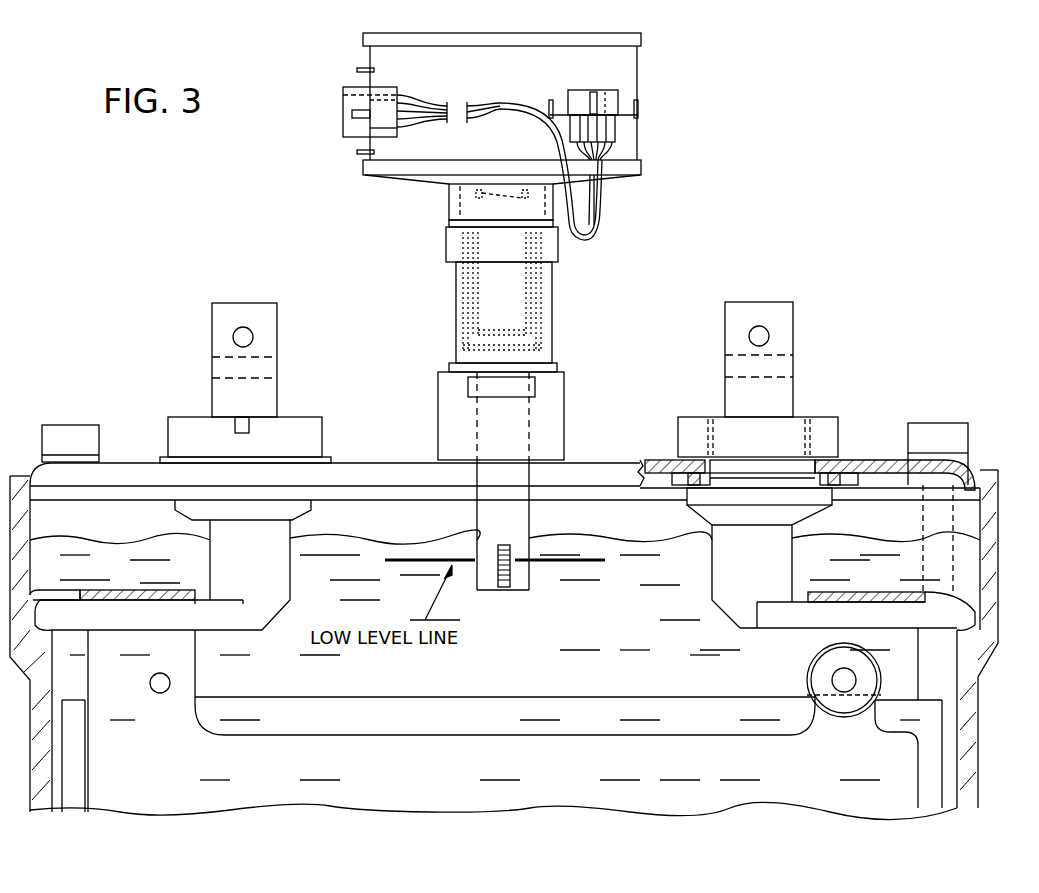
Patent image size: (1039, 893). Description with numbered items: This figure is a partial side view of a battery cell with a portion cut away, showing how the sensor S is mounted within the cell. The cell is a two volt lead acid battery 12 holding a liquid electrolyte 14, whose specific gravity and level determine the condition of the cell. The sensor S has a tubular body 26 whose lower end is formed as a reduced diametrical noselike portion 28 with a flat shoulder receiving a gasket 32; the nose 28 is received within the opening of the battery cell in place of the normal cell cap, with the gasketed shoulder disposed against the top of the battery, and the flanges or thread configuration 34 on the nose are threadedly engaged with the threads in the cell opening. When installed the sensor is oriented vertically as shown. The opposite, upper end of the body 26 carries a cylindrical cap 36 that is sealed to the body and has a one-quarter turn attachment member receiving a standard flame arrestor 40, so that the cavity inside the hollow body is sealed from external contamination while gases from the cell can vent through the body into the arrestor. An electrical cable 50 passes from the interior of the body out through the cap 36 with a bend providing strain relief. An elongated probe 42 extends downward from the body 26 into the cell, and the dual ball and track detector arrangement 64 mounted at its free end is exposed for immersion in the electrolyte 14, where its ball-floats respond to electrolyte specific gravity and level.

The flame arrestor 40 is at (645, 86).
The electrical cable 50 is at (597, 226).
The cylindrical cap 36 is at (446, 249).
The tubular body 26 is at (552, 303).
The thread configuration 34 is at (515, 383).
The gasket 32 is at (555, 371).
The noselike portion 28 is at (568, 390).
The elongated probe 42 is at (533, 457).
The dual ball and track detector arrangement 64 is at (520, 583).
The lead acid battery 12 is at (825, 324).
The liquid electrolyte 14 is at (643, 641).
The sensor S is at (578, 268).